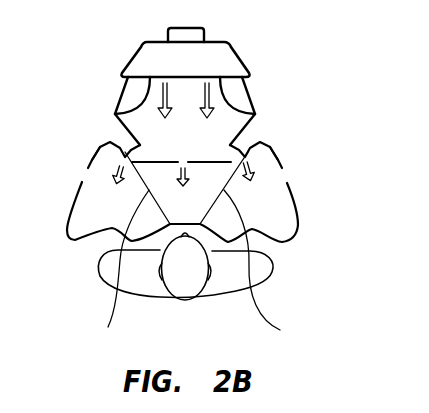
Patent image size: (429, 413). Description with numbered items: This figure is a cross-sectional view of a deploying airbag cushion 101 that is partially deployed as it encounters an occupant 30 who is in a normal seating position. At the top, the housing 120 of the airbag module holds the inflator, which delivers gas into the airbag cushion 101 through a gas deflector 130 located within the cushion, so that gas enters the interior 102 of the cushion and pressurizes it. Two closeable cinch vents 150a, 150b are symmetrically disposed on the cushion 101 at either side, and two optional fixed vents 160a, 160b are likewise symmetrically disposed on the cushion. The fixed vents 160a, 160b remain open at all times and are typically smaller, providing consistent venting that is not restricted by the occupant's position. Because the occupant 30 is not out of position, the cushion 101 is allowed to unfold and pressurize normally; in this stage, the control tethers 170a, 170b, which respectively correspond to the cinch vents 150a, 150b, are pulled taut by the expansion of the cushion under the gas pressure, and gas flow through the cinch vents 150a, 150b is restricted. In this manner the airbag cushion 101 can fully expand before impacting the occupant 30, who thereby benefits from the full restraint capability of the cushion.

The occupant 30 is at (197, 282).
The airbag cushion 101 is at (67, 236).
The interior 102 is at (122, 214).
The housing 120 is at (200, 72).
The gas deflector 130 is at (220, 103).
The closeable cinch vent 150a is at (110, 142).
The closeable cinch vent 150b is at (250, 132).
The fixed vent 160a is at (82, 172).
The fixed vent 160b is at (283, 173).
The control tether 170a is at (108, 268).
The control tether 170b is at (273, 267).